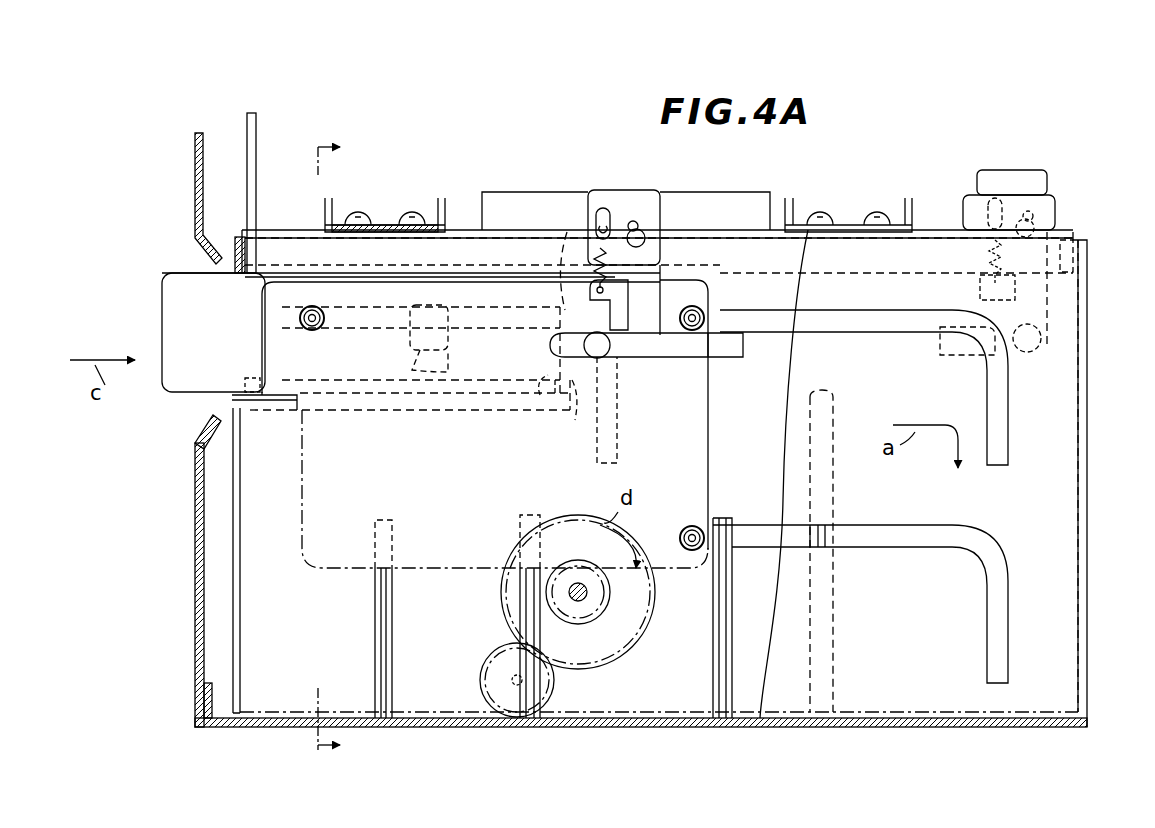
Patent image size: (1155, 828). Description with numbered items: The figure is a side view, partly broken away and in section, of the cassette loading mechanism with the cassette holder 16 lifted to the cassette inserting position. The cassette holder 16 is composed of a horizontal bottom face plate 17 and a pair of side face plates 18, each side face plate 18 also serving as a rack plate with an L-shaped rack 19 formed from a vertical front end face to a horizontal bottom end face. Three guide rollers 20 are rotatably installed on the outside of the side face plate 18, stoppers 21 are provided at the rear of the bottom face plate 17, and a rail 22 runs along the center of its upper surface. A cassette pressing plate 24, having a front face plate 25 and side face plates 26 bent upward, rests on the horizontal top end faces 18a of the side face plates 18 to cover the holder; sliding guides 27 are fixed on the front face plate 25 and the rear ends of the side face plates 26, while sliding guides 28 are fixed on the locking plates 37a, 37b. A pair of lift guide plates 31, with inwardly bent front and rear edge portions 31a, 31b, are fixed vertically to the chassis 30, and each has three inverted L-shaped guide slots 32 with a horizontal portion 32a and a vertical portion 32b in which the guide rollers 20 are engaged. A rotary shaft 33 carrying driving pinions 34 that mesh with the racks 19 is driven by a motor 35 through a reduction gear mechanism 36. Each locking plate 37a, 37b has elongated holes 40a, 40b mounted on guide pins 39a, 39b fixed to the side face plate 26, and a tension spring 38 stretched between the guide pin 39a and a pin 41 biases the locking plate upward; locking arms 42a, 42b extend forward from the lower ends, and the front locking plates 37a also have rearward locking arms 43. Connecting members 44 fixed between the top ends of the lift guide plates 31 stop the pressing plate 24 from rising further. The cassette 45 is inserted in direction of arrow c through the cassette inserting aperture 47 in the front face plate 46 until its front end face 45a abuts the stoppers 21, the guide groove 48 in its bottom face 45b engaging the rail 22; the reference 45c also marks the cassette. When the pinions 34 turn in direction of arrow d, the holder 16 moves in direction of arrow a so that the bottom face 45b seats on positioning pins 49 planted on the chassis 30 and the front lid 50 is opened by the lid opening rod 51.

The cassette holder 16 is at (296, 500).
The bottom face plate 17 is at (445, 410).
The side face plate 18 is at (470, 570).
The horizontal top end face 18a is at (335, 282).
The L-shaped rack 19 is at (340, 570).
The guide roller 20 is at (308, 330).
The stopper 21 is at (578, 410).
The rail 22 is at (240, 400).
The cassette pressing plate 24 is at (288, 228).
The front face plate 25 is at (250, 140).
The side face plate 26 is at (502, 192).
The sliding guide 27 is at (240, 240).
The sliding guide 28 is at (640, 350).
The chassis 30 is at (312, 712).
The lift guide plate 31 is at (262, 703).
The front edge portion 31a is at (240, 505).
The rear edge portion 31b is at (1080, 500).
The guide slot 32 is at (360, 328).
The horizontal portion 32a is at (398, 328).
The vertical portion 32b is at (618, 426).
The rotary shaft 33 is at (600, 600).
The driving pinion 34 is at (590, 595).
The motor 35 is at (550, 688).
The reduction gear mechanism 36 is at (600, 700).
The locking plate 37a is at (680, 296).
The locking plate 37b is at (1050, 300).
The tension spring 38 is at (598, 260).
The guide pin 39a is at (606, 222).
The guide pin 39b is at (645, 238).
The elongated hole 40a is at (603, 215).
The elongated hole 40b is at (636, 226).
The pin 41 is at (600, 292).
The locking arm 42a is at (552, 353).
The locking arm 42b is at (942, 340).
The locking arm 43 is at (730, 357).
The connecting member 44 is at (440, 215).
The cassette 45 is at (165, 300).
The front end face 45a is at (552, 395).
The bottom face 45b is at (180, 395).
The holder top 45c is at (190, 272).
The front face plate 46 is at (196, 185).
The cassette inserting aperture 47 is at (205, 422).
The guide groove 48 is at (418, 378).
The positioning pin 49 is at (388, 676).
The front lid 50 is at (562, 270).
The lid opening rod 51 is at (826, 665).